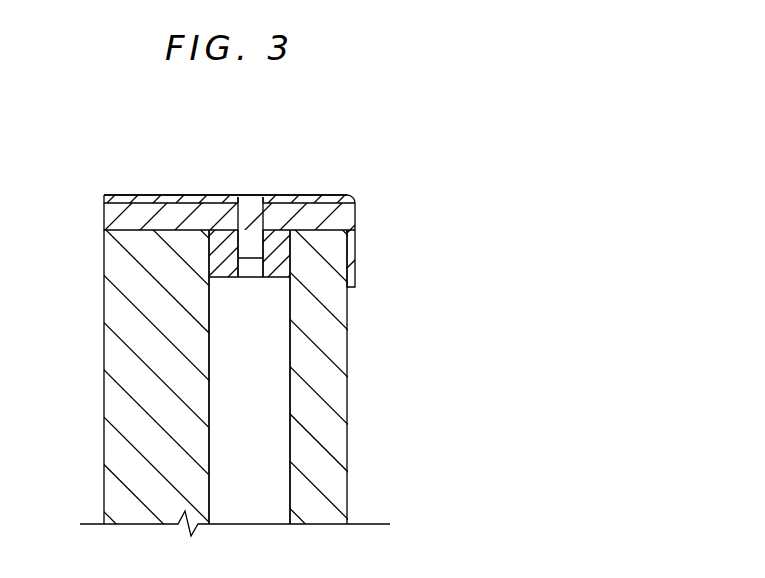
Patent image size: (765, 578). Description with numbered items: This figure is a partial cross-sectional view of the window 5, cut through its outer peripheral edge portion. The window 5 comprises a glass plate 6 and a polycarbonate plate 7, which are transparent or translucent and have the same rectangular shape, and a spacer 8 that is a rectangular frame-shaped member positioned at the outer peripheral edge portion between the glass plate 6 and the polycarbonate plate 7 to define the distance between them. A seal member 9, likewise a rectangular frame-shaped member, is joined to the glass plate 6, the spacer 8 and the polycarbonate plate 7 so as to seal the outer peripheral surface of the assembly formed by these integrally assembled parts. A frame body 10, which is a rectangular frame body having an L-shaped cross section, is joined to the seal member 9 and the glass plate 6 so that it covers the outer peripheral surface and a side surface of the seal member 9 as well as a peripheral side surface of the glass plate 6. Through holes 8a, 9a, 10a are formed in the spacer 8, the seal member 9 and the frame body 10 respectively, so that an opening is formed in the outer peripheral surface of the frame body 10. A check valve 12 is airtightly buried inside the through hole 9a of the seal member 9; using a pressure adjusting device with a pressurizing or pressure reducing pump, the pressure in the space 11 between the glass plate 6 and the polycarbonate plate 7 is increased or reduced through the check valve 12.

The window 5 is at (459, 321).
The glass plate 6 is at (348, 352).
The polycarbonate plate 7 is at (104, 453).
The spacer 8 is at (223, 252).
The through hole of the spacer 8a is at (240, 261).
The seal member 9 is at (137, 207).
The through hole of the seal member 9a is at (257, 207).
The frame body 10 is at (357, 222).
The through hole of the frame body 10a is at (243, 200).
The space 11 is at (287, 412).
The check valve 12 is at (247, 229).